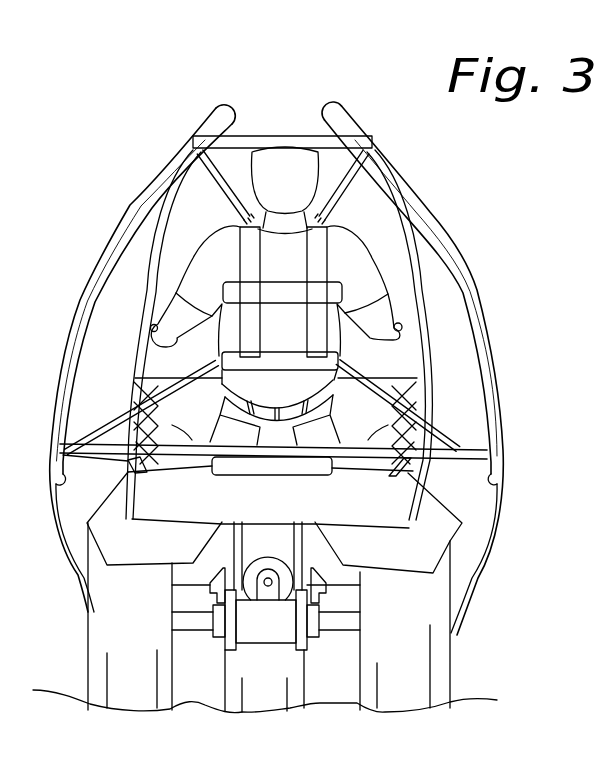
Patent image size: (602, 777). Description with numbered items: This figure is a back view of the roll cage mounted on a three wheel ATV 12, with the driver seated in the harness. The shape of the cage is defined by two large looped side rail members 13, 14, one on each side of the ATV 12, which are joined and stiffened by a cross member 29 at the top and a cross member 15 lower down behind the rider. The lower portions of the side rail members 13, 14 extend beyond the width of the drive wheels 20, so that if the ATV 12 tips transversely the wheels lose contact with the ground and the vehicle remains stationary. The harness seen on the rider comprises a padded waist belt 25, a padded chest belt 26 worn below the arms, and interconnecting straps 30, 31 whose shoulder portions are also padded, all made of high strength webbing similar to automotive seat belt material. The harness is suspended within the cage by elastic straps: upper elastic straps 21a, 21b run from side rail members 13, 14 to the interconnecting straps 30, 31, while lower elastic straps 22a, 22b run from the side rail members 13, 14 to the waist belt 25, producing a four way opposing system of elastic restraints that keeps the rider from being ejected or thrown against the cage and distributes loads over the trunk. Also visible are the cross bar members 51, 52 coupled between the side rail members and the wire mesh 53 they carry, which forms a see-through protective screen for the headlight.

The three wheel ATV 12 is at (274, 515).
The side rail member 13 is at (100, 253).
The side rail member 14 is at (460, 262).
The cross member 15 is at (395, 449).
The drive wheels 20 is at (96, 645).
The elastic strap 21a is at (220, 183).
The elastic strap 21b is at (358, 173).
The elastic strap 22a is at (108, 434).
The elastic strap 22b is at (450, 433).
The waist belt 25 is at (295, 367).
The chest belt 26 is at (283, 287).
The cross member 29 is at (290, 136).
The interconnecting strap 30 is at (323, 340).
The interconnecting strap 31 is at (248, 338).
The cross bar member 51 is at (143, 378).
The cross bar member 52 is at (131, 472).
The wire mesh 53 is at (405, 458).